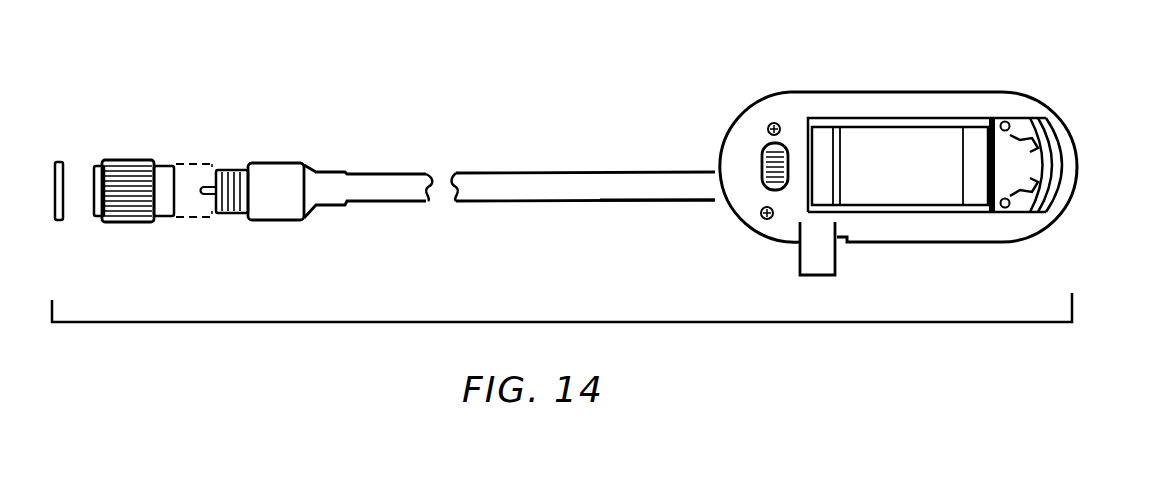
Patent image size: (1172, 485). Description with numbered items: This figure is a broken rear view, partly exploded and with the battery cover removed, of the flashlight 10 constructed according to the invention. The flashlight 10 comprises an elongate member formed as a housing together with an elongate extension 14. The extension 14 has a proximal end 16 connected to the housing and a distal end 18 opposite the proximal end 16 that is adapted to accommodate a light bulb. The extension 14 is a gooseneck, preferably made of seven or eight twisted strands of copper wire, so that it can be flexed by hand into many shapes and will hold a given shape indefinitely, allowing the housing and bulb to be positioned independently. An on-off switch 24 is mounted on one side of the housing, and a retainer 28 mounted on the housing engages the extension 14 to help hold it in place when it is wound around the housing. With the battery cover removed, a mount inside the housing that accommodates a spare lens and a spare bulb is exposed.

The flashlight 10 is at (763, 97).
The extension 14 is at (546, 172).
The proximal end 16 is at (700, 202).
The distal end 18 is at (130, 222).
The on-off switch 24 is at (762, 153).
The retainer 28 is at (803, 277).